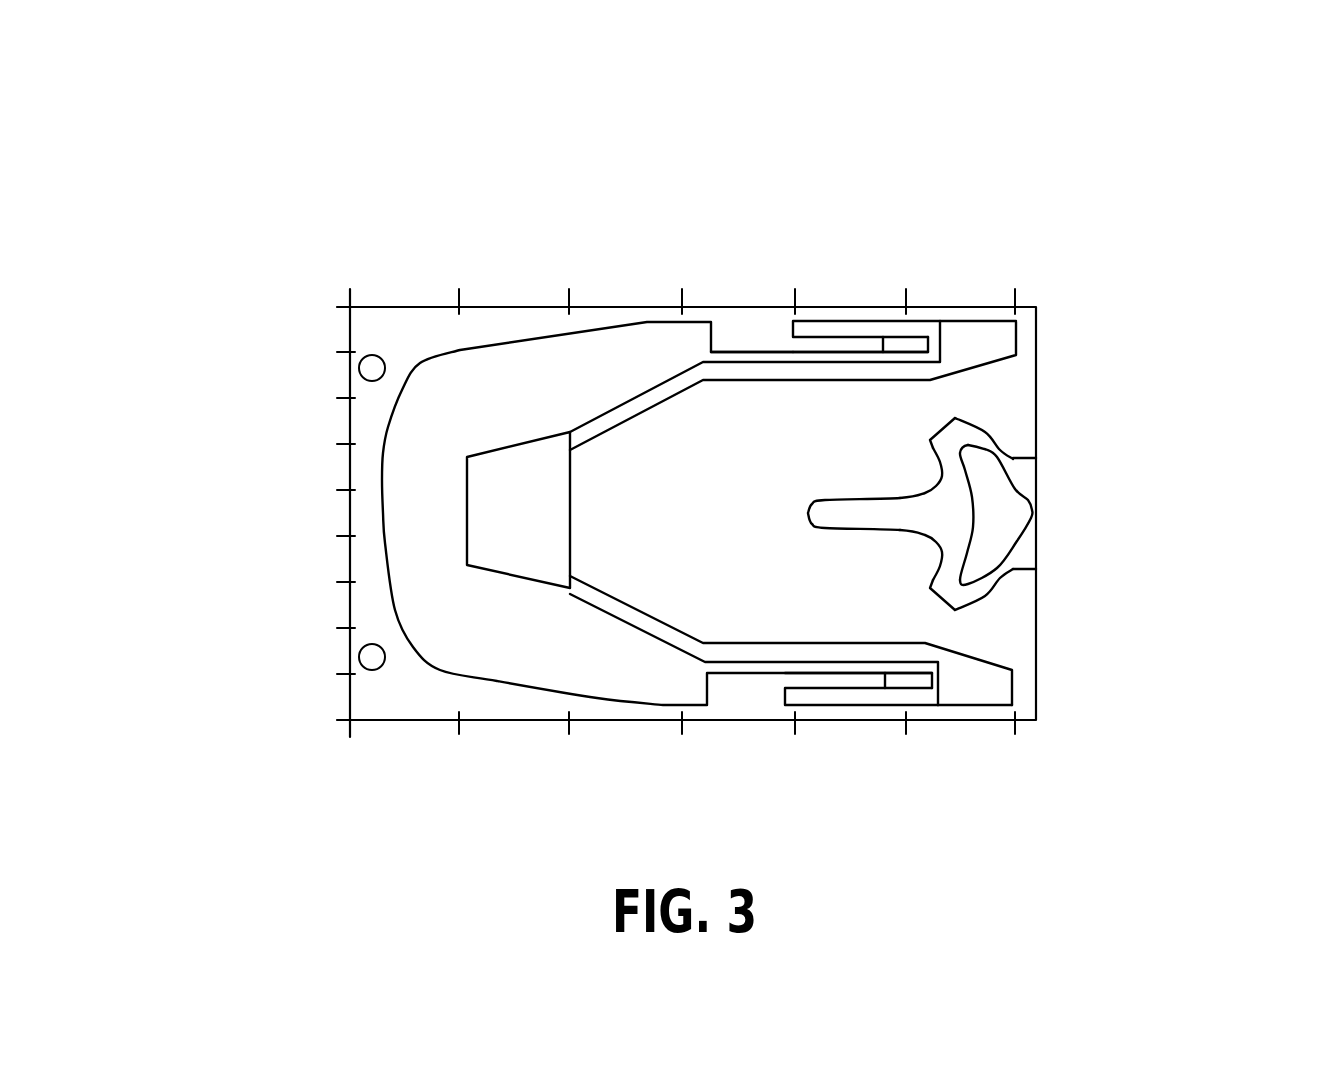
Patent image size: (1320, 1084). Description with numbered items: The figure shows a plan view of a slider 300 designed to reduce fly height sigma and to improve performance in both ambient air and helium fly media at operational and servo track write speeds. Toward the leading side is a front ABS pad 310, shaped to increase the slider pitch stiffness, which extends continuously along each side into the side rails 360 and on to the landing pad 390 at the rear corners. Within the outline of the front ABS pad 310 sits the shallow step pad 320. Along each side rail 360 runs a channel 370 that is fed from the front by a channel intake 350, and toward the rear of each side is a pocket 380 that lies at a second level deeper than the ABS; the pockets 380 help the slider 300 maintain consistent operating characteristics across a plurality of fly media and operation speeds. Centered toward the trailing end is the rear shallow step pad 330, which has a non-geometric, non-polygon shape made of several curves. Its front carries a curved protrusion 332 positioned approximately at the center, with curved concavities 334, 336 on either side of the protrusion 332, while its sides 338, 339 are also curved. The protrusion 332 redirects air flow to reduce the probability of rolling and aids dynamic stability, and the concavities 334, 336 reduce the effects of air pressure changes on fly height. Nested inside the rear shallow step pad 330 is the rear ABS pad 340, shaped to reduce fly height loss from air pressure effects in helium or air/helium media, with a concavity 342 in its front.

The slider 300 is at (452, 148).
The front ABS pad 310 is at (430, 532).
The shallow step pad 320 is at (533, 550).
The rear shallow step pad 330 is at (1026, 513).
The protrusion 332 is at (843, 515).
The concavity 334 is at (937, 481).
The concavity 336 is at (937, 547).
The side of rear shallow step pad 338 is at (963, 419).
The side of rear shallow step pad 339 is at (967, 608).
The rear ABS pad 340 is at (1057, 515).
The concavity 342 is at (968, 506).
The channel intake 350 is at (753, 330).
The side rail 360 is at (816, 332).
The channel 370 is at (842, 347).
The rear side pocket 380 is at (901, 348).
The landing pad 390 is at (933, 333).